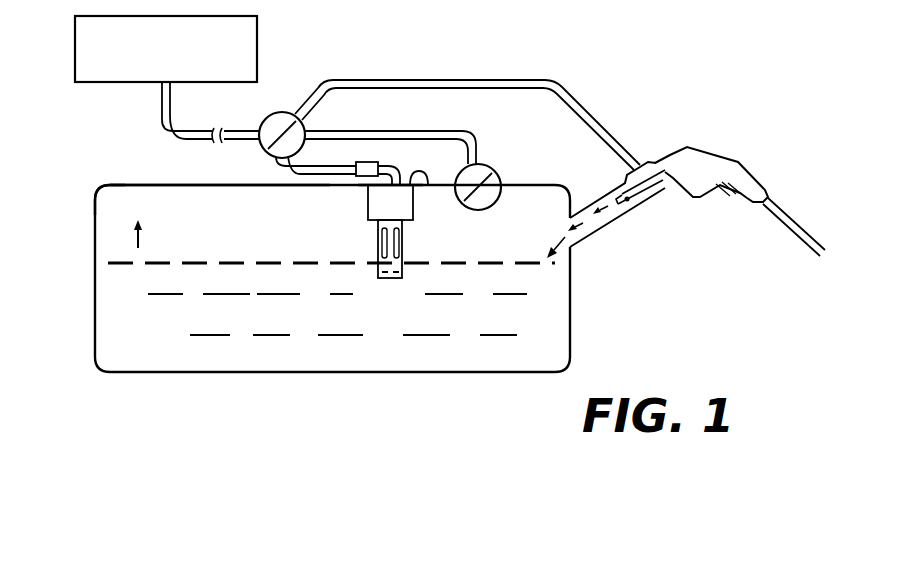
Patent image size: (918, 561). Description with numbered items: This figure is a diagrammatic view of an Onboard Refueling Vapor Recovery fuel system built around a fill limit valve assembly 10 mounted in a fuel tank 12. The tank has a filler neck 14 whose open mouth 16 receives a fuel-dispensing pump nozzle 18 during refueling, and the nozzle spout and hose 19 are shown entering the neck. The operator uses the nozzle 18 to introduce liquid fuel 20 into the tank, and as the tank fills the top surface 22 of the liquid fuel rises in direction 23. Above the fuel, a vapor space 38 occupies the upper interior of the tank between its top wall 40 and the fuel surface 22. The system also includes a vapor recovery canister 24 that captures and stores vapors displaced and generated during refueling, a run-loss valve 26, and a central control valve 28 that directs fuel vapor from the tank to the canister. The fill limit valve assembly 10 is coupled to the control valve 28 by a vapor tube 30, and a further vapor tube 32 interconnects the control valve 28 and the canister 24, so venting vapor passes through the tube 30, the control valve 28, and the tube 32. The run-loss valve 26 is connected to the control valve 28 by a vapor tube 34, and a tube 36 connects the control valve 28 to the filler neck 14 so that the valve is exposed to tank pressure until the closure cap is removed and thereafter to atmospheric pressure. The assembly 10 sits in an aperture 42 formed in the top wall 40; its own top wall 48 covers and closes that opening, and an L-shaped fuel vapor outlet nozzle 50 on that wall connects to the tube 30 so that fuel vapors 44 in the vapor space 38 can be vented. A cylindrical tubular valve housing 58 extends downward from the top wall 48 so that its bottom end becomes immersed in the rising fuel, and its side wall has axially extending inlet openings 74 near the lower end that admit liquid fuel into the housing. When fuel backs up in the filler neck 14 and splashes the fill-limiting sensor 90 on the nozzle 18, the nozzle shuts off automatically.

The fill limit valve assembly 10 is at (329, 235).
The fuel tank 12 is at (583, 338).
The filler neck 14 is at (611, 235).
The open mouth 16 is at (657, 158).
The fuel-dispensing pump nozzle 18 is at (740, 142).
The nozzle spout / hose 19 is at (740, 203).
The liquid fuel 20 is at (580, 217).
The top surface of liquid fuel 22 is at (158, 260).
The direction of fuel rise 23 is at (133, 245).
The vapor recovery canister 24 is at (252, 52).
The run-loss valve 26 is at (498, 168).
The central control valve 28 is at (300, 118).
The vapor tube 30 is at (280, 173).
The vapor tube 32 is at (170, 118).
The vapor tube 34 is at (405, 130).
The tube 36 is at (454, 80).
The vapor space 38 is at (114, 190).
The top wall of fuel tank 40 is at (187, 183).
The aperture 42 is at (412, 188).
The fuel vapors 44 is at (363, 230).
The top wall of fill limit valve assembly 48 is at (424, 178).
The L-shaped fuel vapor outlet nozzle 50 is at (398, 157).
The valve housing 58 is at (383, 288).
The inlet openings 74 is at (383, 240).
The fill-limiting sensor 90 is at (628, 202).